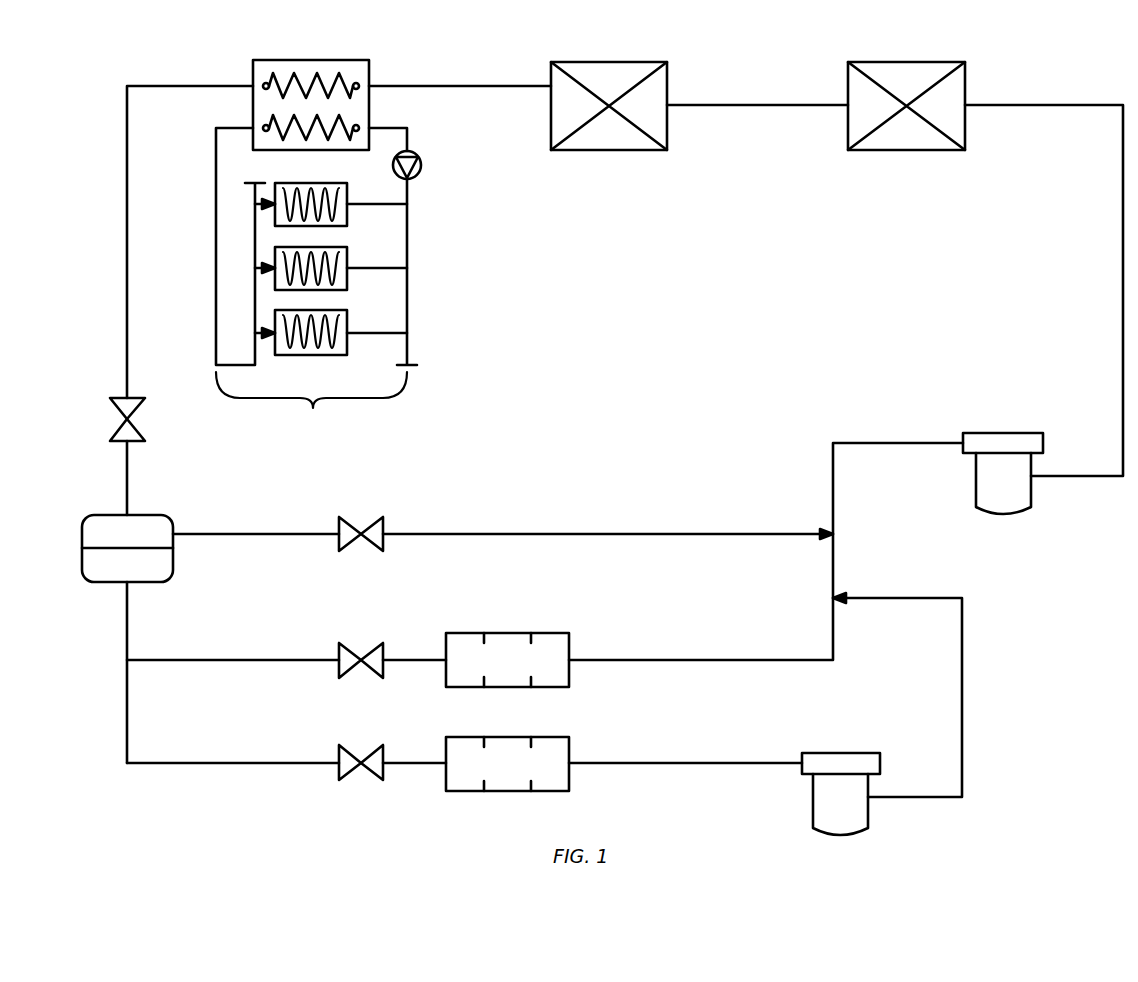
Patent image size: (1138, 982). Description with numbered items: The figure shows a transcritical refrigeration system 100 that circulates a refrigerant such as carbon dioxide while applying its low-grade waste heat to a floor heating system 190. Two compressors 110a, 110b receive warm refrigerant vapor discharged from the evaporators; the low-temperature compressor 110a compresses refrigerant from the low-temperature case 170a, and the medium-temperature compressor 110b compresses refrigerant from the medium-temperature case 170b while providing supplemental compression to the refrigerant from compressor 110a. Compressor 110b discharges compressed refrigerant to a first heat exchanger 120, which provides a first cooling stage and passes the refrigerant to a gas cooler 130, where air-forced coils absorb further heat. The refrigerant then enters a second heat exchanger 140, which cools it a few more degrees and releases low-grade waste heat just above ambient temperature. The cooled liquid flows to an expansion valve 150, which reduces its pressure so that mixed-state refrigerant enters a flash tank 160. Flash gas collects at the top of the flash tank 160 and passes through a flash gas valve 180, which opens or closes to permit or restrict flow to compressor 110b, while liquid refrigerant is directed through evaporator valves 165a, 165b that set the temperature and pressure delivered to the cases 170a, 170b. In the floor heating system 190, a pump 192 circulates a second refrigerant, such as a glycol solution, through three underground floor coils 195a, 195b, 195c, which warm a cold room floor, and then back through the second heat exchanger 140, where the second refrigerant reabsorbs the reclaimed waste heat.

The refrigeration system 100 is at (1060, 673).
The compressor 110a is at (835, 753).
The compressor 110b is at (1012, 515).
The first heat exchanger 120 is at (900, 150).
The gas cooler 130 is at (604, 150).
The second heat exchanger 140 is at (348, 61).
The expansion valve 150 is at (145, 408).
The flash tank 160 is at (175, 582).
The evaporator valve 165a is at (372, 778).
The evaporator valve 165b is at (372, 676).
The first evaporator 170a is at (548, 791).
The second evaporator 170b is at (548, 687).
The flash gas valve 180 is at (365, 550).
The floor heating system 190 is at (345, 307).
The pump 192 is at (422, 171).
The coil 195a is at (348, 216).
The coil 195b is at (348, 280).
The coil 195c is at (348, 344).